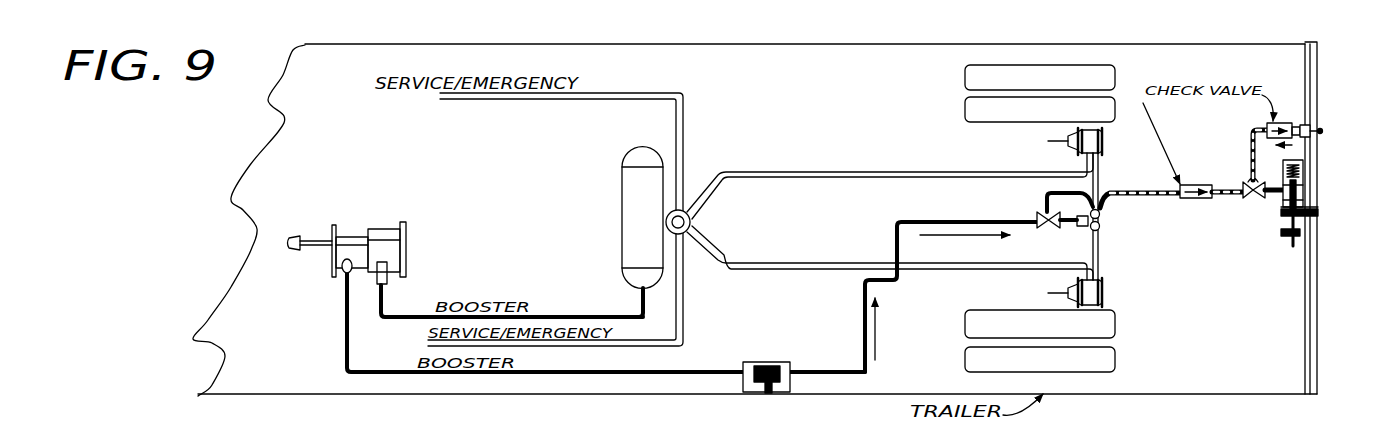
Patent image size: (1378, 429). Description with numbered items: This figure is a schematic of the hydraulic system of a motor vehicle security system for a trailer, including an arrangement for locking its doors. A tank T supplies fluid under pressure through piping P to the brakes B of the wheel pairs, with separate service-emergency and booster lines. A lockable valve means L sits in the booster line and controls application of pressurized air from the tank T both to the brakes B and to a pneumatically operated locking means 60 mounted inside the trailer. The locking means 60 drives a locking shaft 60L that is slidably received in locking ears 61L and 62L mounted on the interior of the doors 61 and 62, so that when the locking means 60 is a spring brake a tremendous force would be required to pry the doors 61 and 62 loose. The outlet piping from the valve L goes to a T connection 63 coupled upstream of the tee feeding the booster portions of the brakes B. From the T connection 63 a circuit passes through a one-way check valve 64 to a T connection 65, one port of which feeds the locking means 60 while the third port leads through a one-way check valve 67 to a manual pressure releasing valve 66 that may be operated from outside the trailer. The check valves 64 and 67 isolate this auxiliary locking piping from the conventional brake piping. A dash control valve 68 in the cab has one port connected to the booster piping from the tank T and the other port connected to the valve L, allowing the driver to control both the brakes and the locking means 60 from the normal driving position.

The locking means 60 is at (1303, 172).
The locking shaft 60L is at (1283, 211).
The door 61 is at (1300, 187).
The locking ear 61L is at (1306, 213).
The door 62 is at (1310, 241).
The locking ear 62L is at (1297, 246).
The T connection 63 is at (1040, 216).
The one-way check valve 64 is at (1198, 185).
The T connection 65 is at (1248, 197).
The manual pressure releasing valve 66 is at (1322, 129).
The one-way check valve 67 is at (1282, 123).
The dash control valve 68 is at (405, 245).
The tank T is at (632, 203).
The lockable valve means L is at (770, 365).
The brakes B is at (1112, 140).
The piping P is at (610, 92).